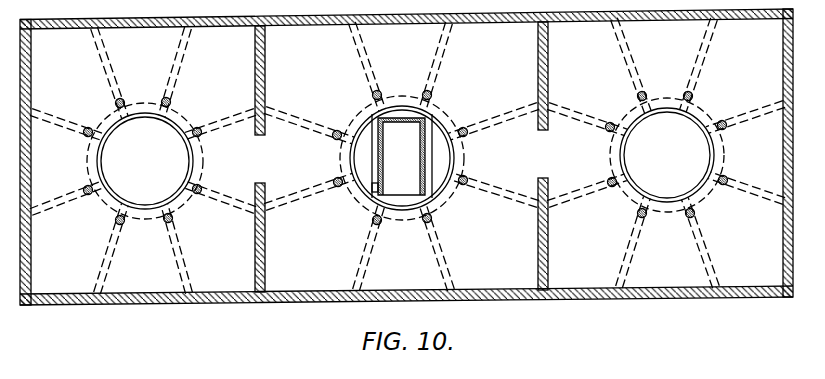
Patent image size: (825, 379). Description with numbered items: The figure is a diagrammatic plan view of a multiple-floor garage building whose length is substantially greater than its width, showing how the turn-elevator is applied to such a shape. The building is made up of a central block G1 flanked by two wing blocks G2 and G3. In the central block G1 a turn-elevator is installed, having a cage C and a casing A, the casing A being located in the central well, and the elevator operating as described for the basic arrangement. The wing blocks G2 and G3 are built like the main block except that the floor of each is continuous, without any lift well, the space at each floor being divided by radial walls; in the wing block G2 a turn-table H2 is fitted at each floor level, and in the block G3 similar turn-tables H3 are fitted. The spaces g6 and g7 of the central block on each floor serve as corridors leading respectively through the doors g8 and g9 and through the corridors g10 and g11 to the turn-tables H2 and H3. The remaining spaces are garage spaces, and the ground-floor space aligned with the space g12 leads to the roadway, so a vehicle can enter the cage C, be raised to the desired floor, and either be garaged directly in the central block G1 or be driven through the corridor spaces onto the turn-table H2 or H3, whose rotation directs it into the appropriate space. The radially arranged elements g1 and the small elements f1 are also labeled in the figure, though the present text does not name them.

The struts g1 is at (180, 75).
The space of the central block g6 is at (309, 159).
The space of the central block g7 is at (493, 155).
The door g8 is at (539, 147).
The door g9 is at (259, 163).
The corridor g10 is at (143, 162).
The corridor g11 is at (587, 155).
The space on the central block g12 is at (404, 248).
The fastening bolts f1 is at (429, 94).
The casing A is at (456, 157).
The cage C is at (402, 156).
The turn-table H2 is at (145, 161).
The turn-table H3 is at (667, 155).
The central block G1 is at (510, 298).
The wing block G2 is at (168, 297).
The wing block G3 is at (687, 290).